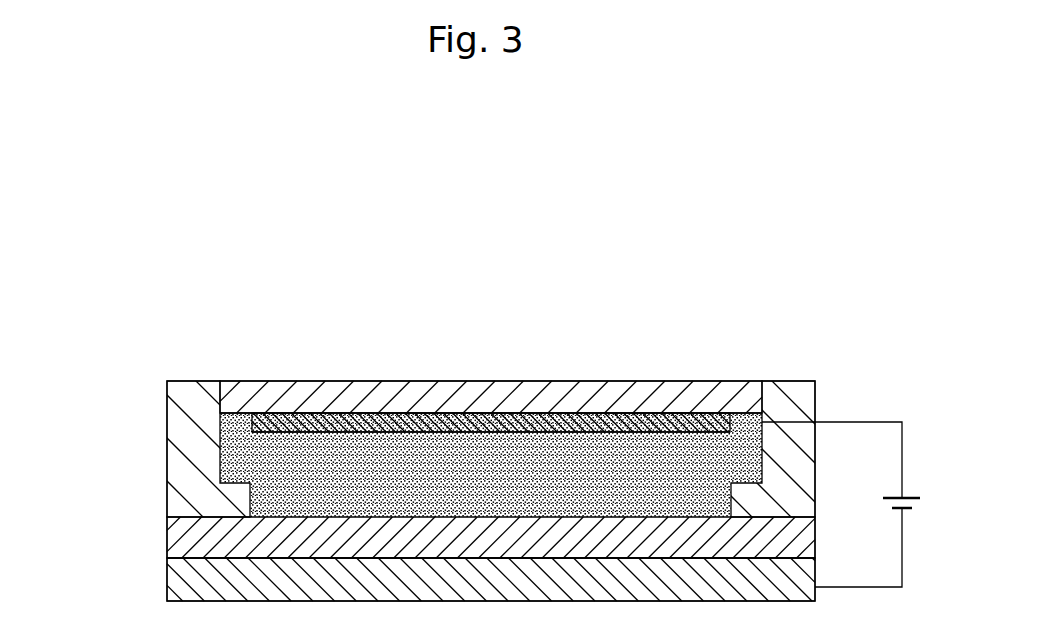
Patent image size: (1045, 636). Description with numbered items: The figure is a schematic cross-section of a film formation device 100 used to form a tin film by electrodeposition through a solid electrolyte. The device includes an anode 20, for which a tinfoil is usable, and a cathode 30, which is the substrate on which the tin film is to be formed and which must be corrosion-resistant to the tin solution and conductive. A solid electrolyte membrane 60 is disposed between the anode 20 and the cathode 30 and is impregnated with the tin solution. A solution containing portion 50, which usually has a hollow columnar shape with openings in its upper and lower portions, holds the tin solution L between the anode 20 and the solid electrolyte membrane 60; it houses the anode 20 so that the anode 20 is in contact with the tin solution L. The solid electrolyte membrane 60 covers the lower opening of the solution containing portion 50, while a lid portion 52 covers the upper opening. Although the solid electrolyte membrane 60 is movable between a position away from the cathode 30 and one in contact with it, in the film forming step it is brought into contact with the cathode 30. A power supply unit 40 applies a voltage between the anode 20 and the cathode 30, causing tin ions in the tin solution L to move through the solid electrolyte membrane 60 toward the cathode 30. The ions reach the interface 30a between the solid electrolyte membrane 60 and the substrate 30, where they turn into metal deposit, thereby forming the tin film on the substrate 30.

The film formation device 100 is at (891, 301).
The anode 20 is at (294, 412).
The lid portion 52 is at (492, 395).
The tin solution L is at (718, 431).
The solution containing portion 50 is at (180, 460).
The solid electrolyte membrane 60 is at (183, 537).
The interface 30a is at (170, 558).
The cathode 30 is at (180, 578).
The power supply unit 40 is at (907, 495).